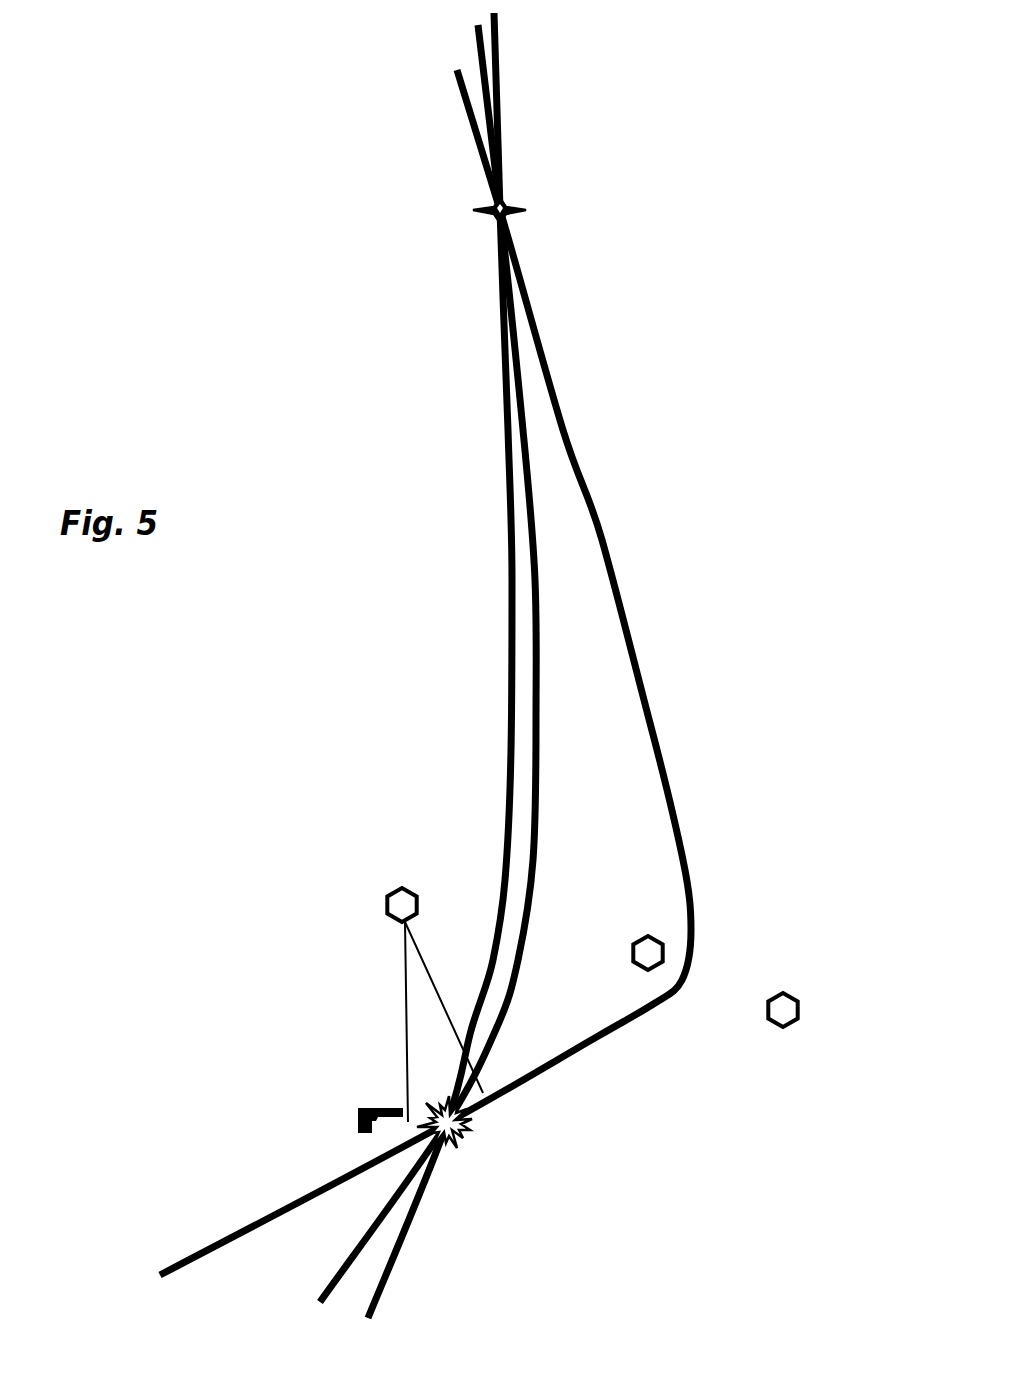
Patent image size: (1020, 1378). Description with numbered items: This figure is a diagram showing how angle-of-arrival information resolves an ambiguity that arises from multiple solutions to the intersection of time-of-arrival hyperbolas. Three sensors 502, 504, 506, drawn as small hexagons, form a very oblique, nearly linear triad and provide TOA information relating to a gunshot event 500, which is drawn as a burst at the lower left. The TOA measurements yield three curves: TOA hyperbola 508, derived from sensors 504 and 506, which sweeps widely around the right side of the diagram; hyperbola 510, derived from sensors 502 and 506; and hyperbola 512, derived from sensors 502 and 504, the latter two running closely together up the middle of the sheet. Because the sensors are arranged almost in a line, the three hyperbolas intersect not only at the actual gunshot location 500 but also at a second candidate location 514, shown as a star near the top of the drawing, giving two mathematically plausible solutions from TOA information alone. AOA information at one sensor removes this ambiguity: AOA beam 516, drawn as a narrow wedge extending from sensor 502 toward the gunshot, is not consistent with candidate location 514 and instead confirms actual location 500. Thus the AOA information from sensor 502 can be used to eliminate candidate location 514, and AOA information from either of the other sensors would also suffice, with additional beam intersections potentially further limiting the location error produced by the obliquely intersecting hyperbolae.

The gunshot event 500 is at (464, 1132).
The sensor 502 is at (396, 928).
The sensor 504 is at (640, 942).
The sensor 506 is at (772, 1026).
The TOA hyperbola 508 is at (648, 727).
The TOA hyperbola 510 is at (540, 605).
The TOA hyperbola 512 is at (507, 523).
The candidate location 514 is at (490, 212).
The AOA beam 516 is at (405, 985).